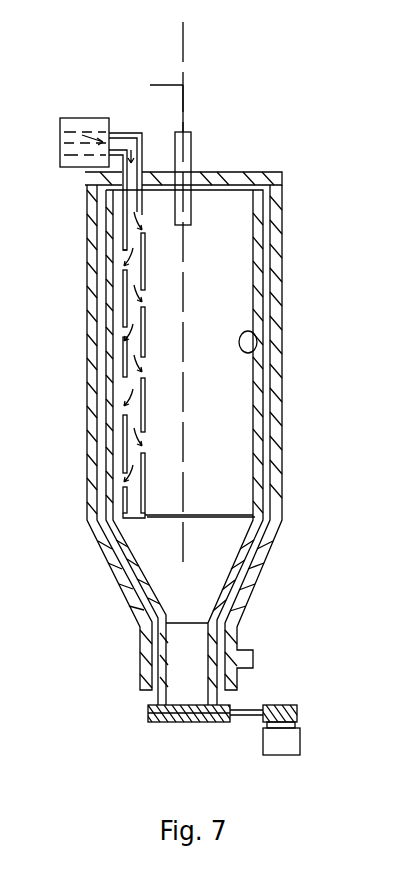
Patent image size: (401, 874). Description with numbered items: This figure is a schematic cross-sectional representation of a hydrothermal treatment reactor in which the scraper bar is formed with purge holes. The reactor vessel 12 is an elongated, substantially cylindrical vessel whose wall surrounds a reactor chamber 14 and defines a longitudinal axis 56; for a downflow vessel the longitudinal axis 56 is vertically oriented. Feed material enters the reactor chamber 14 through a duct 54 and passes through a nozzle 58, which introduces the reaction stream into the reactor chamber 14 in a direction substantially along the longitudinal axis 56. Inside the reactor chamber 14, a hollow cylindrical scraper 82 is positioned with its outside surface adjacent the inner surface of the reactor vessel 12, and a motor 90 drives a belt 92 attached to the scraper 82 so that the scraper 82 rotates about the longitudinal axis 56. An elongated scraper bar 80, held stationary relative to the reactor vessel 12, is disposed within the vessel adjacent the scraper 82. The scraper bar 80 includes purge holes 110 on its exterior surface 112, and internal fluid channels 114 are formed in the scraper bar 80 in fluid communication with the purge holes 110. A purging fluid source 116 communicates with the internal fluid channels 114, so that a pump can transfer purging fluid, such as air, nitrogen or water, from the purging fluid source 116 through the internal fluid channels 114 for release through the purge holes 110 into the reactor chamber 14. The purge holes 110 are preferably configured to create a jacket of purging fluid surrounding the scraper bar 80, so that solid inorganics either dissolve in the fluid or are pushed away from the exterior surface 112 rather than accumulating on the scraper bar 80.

The reactor vessel 12 is at (283, 393).
The reactor chamber 14 is at (245, 440).
The duct 54 is at (167, 85).
The longitudinal axis 56 is at (184, 53).
The nozzle 58 is at (191, 137).
The scraper bar 80 is at (143, 492).
The scraper 82 is at (257, 350).
The motor 90 is at (285, 757).
The belt 92 is at (245, 720).
The purge holes 110 is at (143, 293).
The exterior surface 112 is at (143, 258).
The internal fluid channels 114 is at (133, 305).
The purging fluid source 116 is at (92, 117).